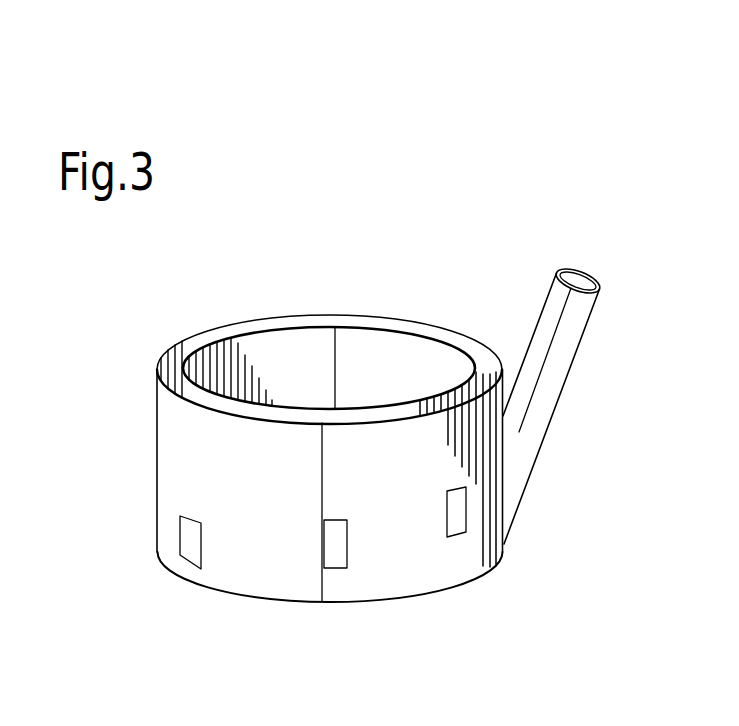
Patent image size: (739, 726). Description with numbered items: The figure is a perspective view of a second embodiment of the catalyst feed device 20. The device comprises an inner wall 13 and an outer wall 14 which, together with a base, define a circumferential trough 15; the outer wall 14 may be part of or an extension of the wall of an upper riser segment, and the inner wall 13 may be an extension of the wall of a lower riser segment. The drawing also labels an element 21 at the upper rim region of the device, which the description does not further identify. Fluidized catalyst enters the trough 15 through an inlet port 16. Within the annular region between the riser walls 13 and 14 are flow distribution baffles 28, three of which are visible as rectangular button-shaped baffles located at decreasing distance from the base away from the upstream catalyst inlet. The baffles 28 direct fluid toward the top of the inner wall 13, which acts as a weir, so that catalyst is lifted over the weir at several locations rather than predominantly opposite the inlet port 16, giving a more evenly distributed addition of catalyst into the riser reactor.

The catalyst feed device 20 is at (446, 178).
The outer wall 14 is at (175, 437).
The upper edge 21 is at (227, 347).
The inner wall 13 is at (260, 345).
The circumferential trough 15 is at (485, 363).
The inlet port 16 is at (590, 283).
The flow distribution baffles 28 is at (190, 553).